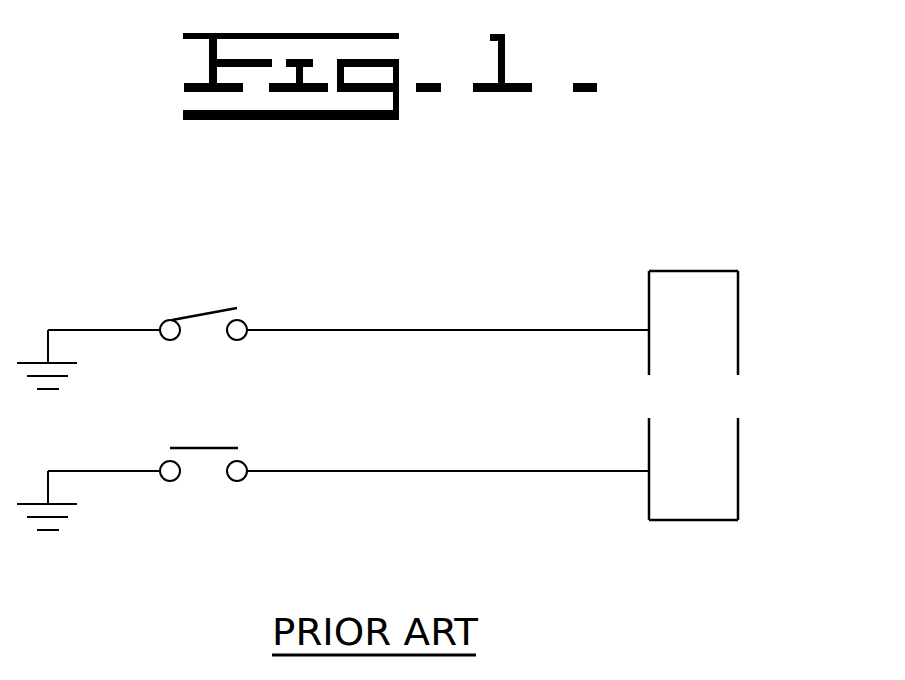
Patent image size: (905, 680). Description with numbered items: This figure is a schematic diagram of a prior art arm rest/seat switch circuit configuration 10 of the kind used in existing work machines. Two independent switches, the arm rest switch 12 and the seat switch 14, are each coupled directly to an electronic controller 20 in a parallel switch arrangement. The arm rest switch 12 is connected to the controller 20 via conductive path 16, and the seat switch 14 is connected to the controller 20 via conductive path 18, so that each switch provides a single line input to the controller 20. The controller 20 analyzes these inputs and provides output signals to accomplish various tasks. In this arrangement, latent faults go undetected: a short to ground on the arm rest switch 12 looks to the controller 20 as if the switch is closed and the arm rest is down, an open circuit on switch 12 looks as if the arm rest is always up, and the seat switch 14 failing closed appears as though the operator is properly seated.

The arm rest/seat switch circuit configuration 10 is at (491, 248).
The arm rest switch 12 is at (178, 315).
The seat switch 14 is at (222, 447).
The conductive path 16 is at (332, 330).
The conductive path 18 is at (480, 472).
The electronic controller 20 is at (730, 308).